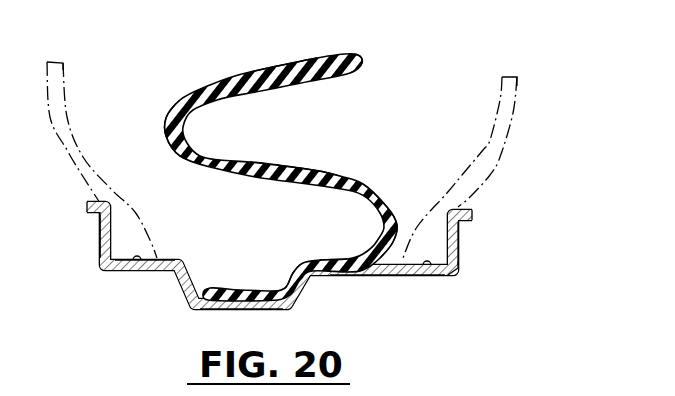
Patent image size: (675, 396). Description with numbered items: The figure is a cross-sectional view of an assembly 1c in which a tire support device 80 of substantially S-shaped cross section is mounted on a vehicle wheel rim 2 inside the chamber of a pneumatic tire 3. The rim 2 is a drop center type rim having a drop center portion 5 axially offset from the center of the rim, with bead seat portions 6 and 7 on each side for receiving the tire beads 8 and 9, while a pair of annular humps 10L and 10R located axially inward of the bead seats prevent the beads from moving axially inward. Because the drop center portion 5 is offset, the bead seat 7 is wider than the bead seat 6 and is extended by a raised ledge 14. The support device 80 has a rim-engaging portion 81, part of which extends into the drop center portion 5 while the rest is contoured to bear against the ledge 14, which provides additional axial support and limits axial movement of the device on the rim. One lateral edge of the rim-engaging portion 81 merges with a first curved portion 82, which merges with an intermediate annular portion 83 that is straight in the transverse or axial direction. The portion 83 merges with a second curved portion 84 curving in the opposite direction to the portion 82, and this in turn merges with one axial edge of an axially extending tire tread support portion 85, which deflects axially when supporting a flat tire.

The assembly 1c is at (93, 266).
The vehicle wheel rim 2 is at (361, 276).
The pneumatic tire 3 is at (508, 114).
The drop center portion 5 is at (213, 307).
The bead seat portion 6 is at (138, 262).
The bead seat portion 7 is at (446, 268).
The tire bead 8 is at (132, 240).
The tire bead 9 is at (432, 249).
The annular hump 10L is at (173, 262).
The annular hump 10R is at (400, 266).
The ledge 14 is at (317, 262).
The tire support device 80 is at (198, 82).
The rim-engaging portion 81 is at (290, 278).
The first curved portion 82 is at (398, 213).
The intermediate annular portion 83 is at (297, 167).
The second curved portion 84 is at (163, 136).
The tire tread support portion 85 is at (293, 58).